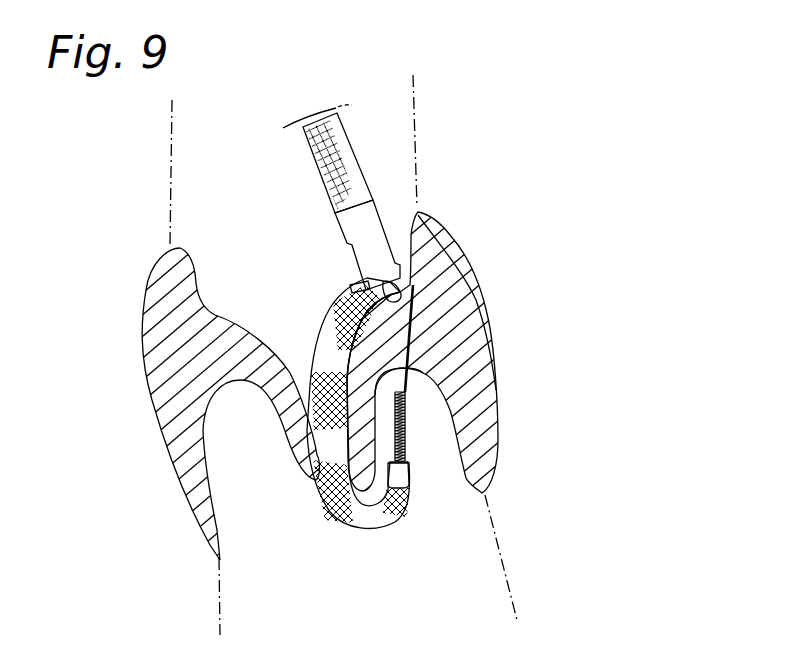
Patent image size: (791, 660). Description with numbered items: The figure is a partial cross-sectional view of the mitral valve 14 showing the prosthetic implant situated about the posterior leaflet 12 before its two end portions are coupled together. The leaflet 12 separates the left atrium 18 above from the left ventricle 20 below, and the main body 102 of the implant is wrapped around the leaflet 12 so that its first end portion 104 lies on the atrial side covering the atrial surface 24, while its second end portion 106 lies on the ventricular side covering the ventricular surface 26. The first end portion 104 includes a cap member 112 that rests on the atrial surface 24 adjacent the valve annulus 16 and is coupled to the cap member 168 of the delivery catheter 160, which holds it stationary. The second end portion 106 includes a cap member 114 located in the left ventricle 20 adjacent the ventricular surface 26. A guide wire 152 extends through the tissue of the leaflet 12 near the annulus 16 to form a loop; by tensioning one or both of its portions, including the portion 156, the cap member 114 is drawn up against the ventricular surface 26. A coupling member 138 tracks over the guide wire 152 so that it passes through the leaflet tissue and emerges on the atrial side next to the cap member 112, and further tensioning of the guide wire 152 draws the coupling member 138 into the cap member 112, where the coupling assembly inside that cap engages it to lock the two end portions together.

The posterior leaflet 12 is at (440, 384).
The mitral valve 14 is at (283, 437).
The valve annulus 16 is at (452, 246).
The left atrium 18 is at (250, 211).
The left ventricle 20 is at (390, 615).
The atrial surface 24 is at (345, 373).
The ventricular surface 26 is at (374, 461).
The main body 102 is at (335, 520).
The first end portion 104 is at (353, 352).
The second end portion 106 is at (445, 525).
The cap member 112 is at (344, 294).
The cap member 114 is at (411, 472).
The coupling member 138 is at (425, 371).
The guide wire 152 is at (450, 290).
The portion of the guide wire 156 is at (563, 324).
The delivery catheter 160 is at (312, 158).
The cap member of the delivery catheter 168 is at (380, 207).